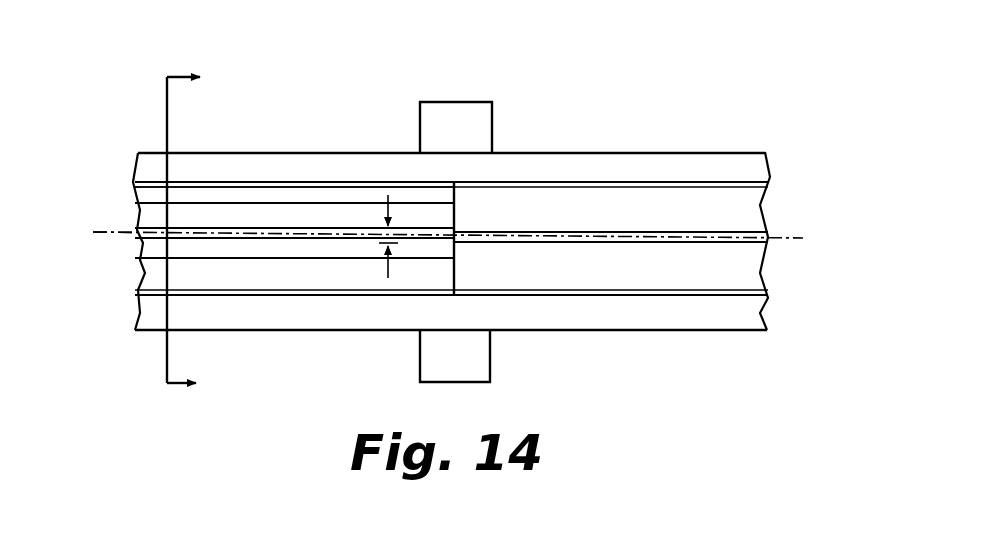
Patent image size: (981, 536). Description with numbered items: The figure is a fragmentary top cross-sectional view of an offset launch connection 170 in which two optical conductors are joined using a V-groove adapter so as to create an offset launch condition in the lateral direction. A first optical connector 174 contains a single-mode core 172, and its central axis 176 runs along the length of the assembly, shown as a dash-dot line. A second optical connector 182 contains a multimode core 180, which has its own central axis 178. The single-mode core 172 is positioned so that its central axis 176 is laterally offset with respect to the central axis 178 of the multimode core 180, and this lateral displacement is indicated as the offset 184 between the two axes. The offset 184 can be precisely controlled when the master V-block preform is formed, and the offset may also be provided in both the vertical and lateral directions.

The shaft assembly 170 is at (527, 65).
The single-mode core 172 is at (583, 243).
The first optical connector 174 is at (646, 190).
The central axis 176 is at (788, 240).
The central axis 178 is at (110, 233).
The multimode core 180 is at (257, 258).
The second optical connector 182 is at (302, 185).
The offset 184 is at (382, 234).